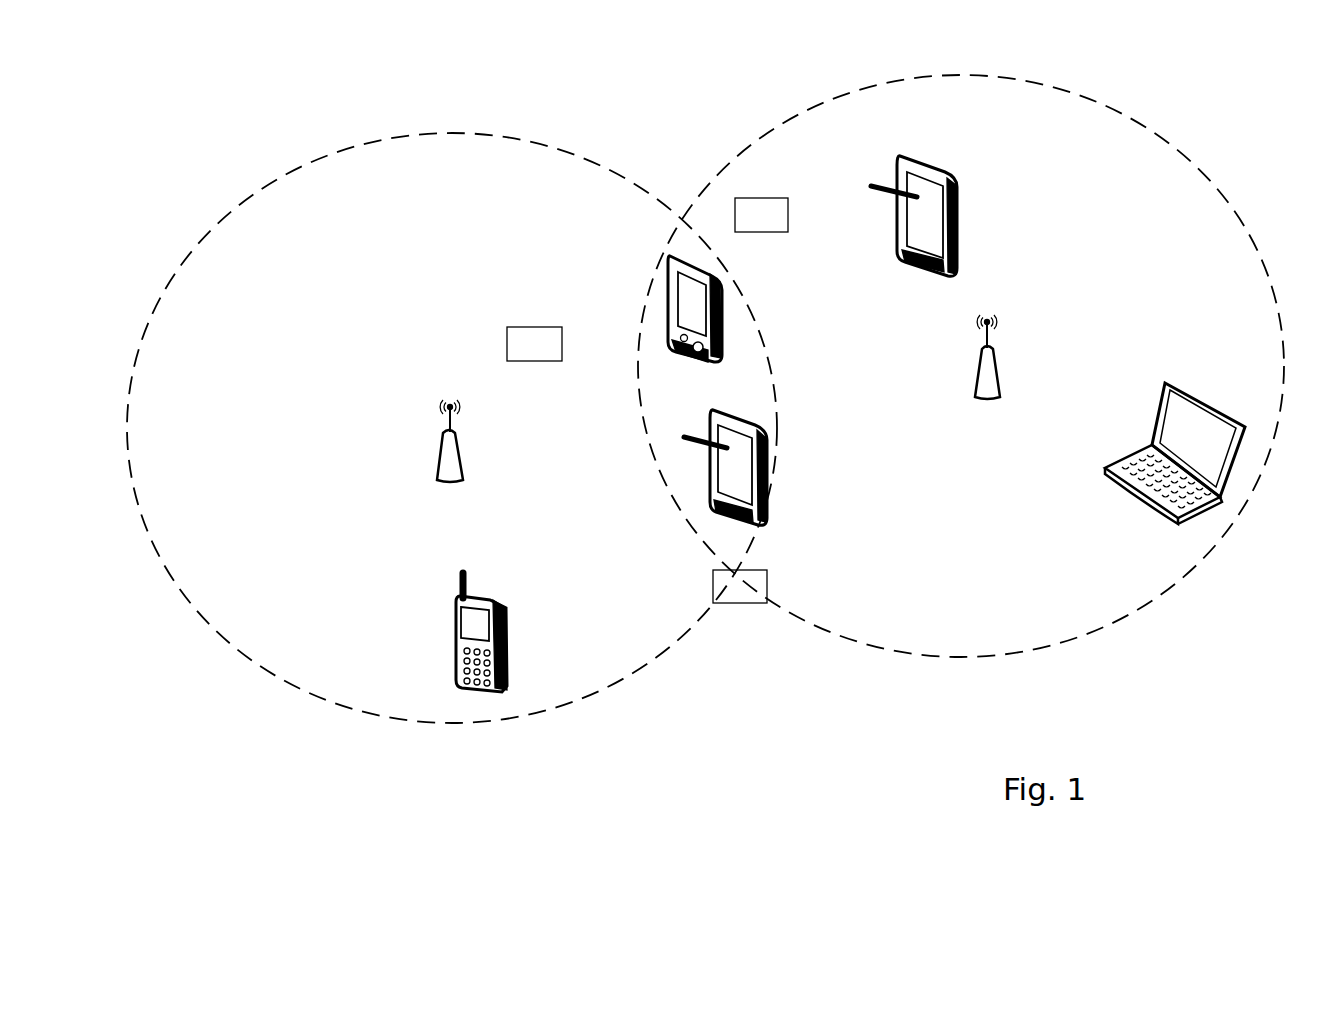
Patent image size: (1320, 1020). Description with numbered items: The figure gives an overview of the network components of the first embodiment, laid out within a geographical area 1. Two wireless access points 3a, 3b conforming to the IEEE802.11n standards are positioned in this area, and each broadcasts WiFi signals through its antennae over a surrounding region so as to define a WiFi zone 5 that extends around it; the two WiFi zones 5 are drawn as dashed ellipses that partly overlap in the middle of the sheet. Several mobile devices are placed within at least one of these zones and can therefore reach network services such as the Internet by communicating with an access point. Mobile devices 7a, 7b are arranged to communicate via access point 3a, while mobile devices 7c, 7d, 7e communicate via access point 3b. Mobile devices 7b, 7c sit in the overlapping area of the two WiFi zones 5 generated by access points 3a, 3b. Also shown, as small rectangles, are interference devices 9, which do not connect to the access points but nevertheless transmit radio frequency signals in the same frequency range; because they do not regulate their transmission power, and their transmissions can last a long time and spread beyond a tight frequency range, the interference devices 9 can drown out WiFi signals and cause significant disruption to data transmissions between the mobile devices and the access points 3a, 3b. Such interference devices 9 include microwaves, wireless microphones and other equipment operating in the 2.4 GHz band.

The geographical area 1 is at (213, 55).
The WiFi zone 5 is at (466, 133).
The interference device 9 is at (562, 329).
The wireless access point 3a is at (458, 443).
The wireless access point 3b is at (1000, 362).
The mobile device 7a is at (510, 658).
The mobile device 7b is at (716, 365).
The mobile device 7c is at (711, 467).
The mobile device 7d is at (957, 208).
The mobile device 7e is at (1123, 496).